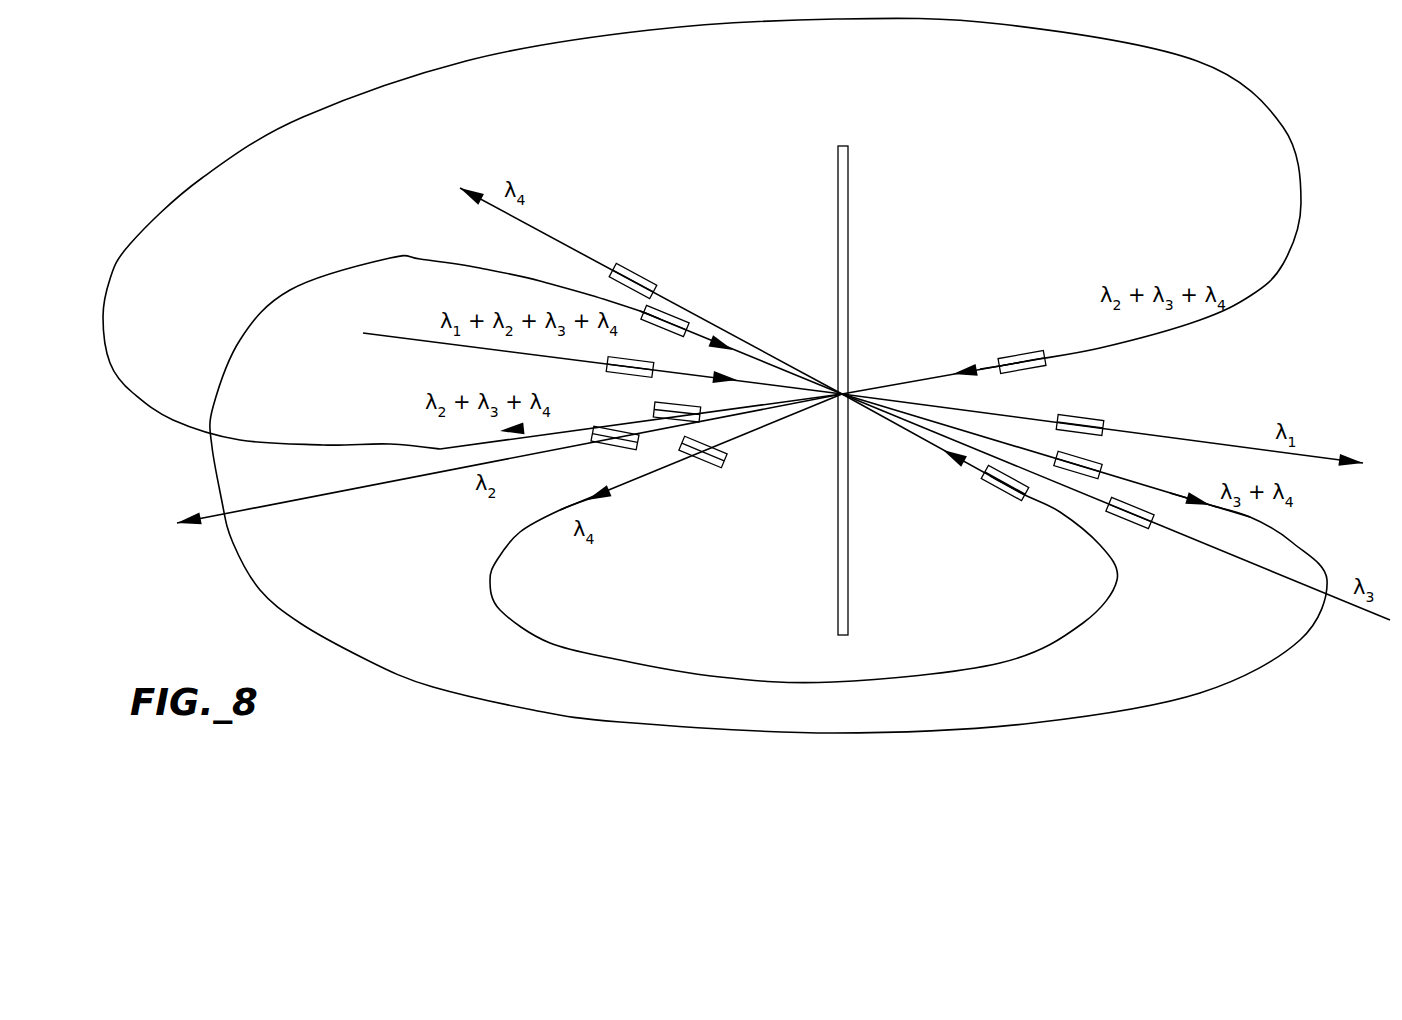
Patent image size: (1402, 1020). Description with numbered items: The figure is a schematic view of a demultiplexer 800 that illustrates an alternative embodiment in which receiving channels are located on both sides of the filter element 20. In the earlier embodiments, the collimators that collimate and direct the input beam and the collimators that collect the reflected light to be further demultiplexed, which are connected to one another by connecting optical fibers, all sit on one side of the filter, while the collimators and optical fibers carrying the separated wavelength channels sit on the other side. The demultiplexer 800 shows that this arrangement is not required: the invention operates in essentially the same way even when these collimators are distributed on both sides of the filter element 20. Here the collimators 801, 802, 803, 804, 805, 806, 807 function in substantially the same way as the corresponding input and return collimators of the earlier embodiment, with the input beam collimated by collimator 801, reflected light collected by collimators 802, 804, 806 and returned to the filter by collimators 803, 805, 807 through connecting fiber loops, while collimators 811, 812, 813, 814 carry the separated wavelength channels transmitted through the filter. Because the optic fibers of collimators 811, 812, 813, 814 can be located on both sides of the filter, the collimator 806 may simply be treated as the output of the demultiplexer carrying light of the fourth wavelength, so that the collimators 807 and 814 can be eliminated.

The demultiplexer 800 is at (1175, 42).
The wavelength-selective filter 20 is at (857, 259).
The collimator 801 is at (612, 374).
The collimator 802 is at (675, 421).
The collimator 803 is at (1020, 352).
The collimator 804 is at (1073, 474).
The collimator 805 is at (682, 312).
The collimator 806 is at (707, 460).
The collimator 807 is at (1002, 492).
The collimator 811 is at (1077, 416).
The collimator 812 is at (627, 447).
The collimator 813 is at (1128, 524).
The collimator 814 is at (641, 272).